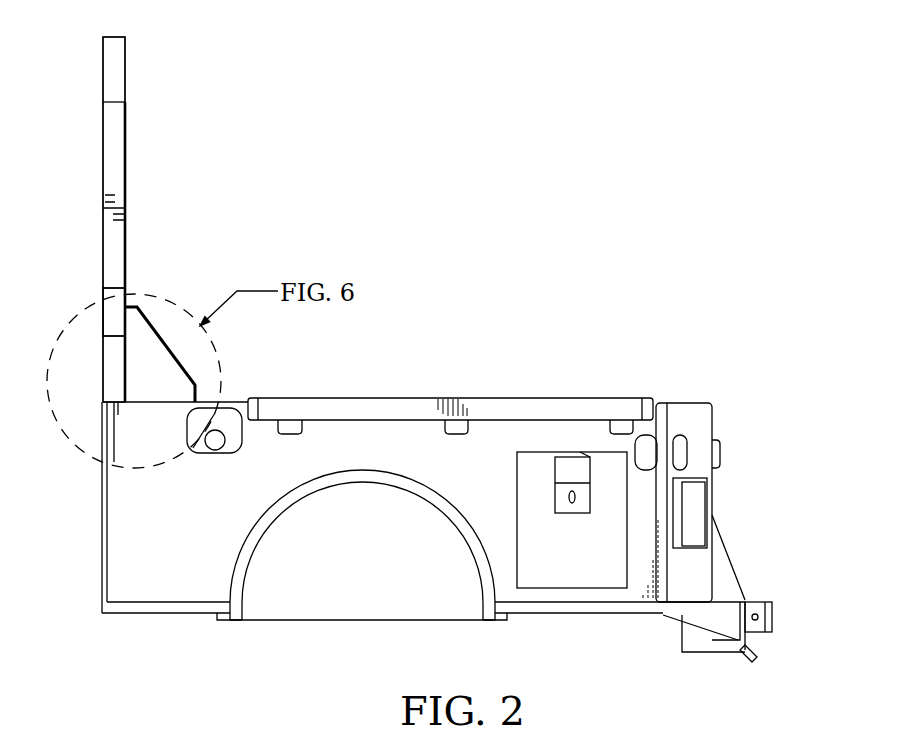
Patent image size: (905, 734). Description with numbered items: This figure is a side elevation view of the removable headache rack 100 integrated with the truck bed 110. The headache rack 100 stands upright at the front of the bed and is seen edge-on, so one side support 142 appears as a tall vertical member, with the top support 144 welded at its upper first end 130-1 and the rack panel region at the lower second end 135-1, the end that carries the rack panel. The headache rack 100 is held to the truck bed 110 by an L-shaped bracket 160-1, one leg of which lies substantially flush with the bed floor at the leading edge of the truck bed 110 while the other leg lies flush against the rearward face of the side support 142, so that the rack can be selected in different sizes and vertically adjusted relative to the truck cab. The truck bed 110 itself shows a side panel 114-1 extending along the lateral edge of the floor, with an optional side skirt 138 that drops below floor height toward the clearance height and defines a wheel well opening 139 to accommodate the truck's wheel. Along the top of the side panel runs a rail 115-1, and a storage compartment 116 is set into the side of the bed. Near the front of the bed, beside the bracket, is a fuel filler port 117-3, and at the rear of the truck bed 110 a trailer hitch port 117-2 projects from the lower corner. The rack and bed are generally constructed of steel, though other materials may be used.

The headache rack 100 is at (102, 65).
The top support 144 is at (118, 68).
The first end of side support 130-1 is at (118, 137).
The side support 142 is at (117, 193).
The second end of side support 135-1 is at (118, 277).
The bracket 160-1 is at (180, 383).
The side skirt 138 is at (217, 530).
The side panel 114-1 is at (165, 592).
The wheel well opening 139 is at (362, 484).
The fuel filler port 117-3 is at (233, 437).
The rail 115-1 is at (561, 406).
The storage compartment 116 is at (592, 560).
The truck bed 110 is at (712, 420).
The trailer hitch port 117-2 is at (773, 616).